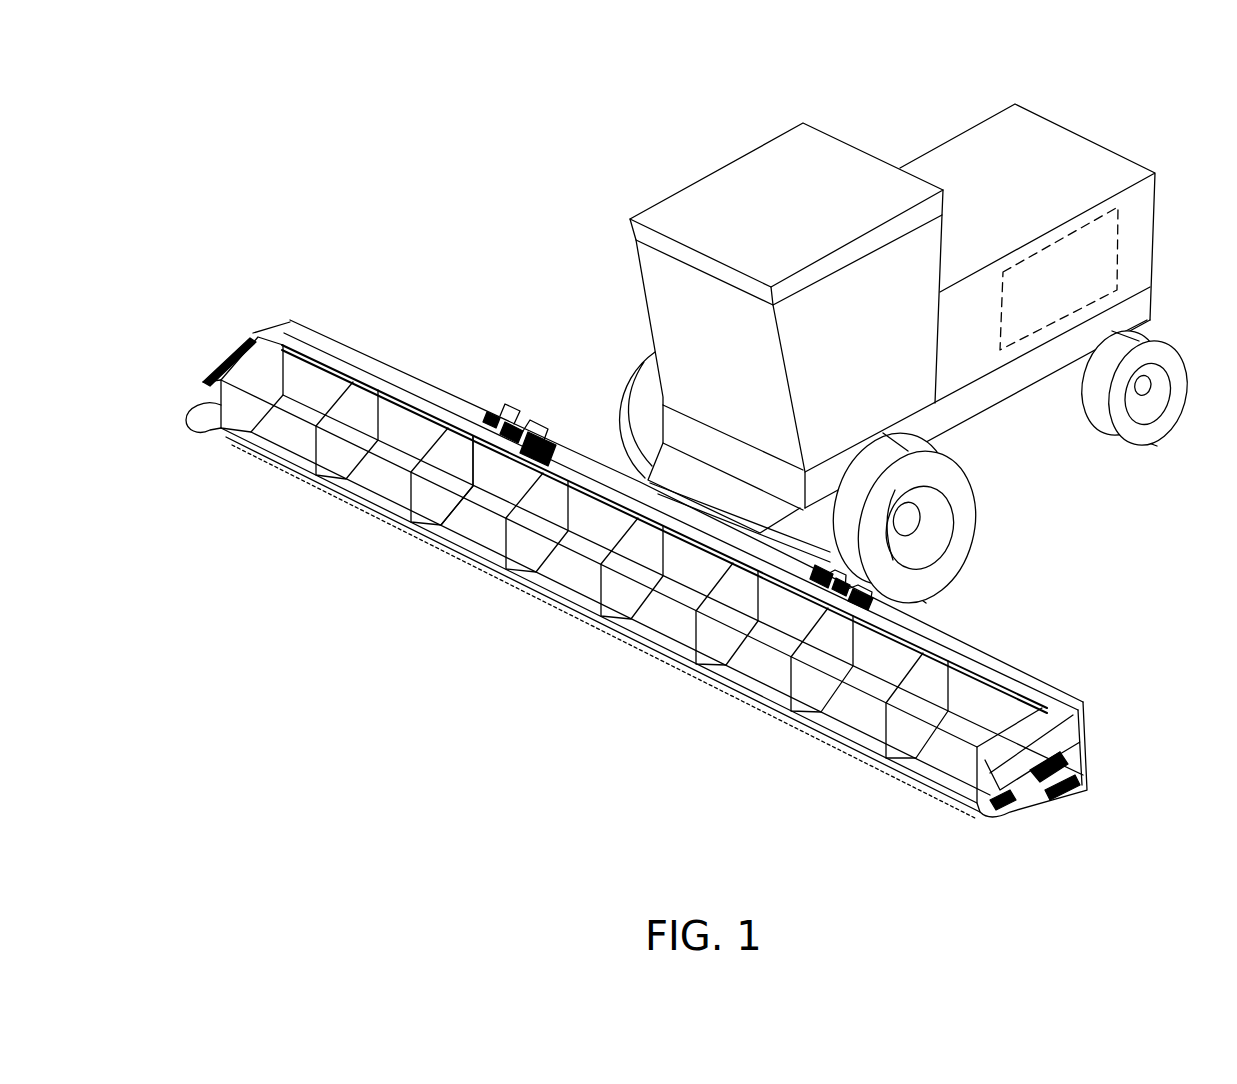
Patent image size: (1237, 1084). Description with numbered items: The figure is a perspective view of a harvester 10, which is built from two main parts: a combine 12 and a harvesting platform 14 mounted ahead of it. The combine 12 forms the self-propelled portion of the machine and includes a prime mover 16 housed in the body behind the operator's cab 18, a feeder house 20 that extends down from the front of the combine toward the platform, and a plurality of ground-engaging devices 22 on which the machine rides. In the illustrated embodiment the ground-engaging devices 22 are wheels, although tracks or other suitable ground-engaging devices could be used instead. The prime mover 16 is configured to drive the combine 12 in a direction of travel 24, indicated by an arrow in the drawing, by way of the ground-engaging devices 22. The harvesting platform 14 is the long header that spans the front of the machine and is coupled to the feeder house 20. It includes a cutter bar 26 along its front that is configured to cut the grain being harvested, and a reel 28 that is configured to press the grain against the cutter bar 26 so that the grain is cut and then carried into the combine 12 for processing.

The harvester 10 is at (520, 147).
The combine 12 is at (858, 100).
The harvesting platform 14 is at (325, 320).
The prime mover 16 is at (1100, 243).
The cab 18 is at (722, 188).
The feeder house 20 is at (642, 472).
The ground-engaging devices 22 is at (640, 390).
The direction of travel 24 is at (412, 735).
The cutter bar 26 is at (462, 556).
The reel 28 is at (428, 440).